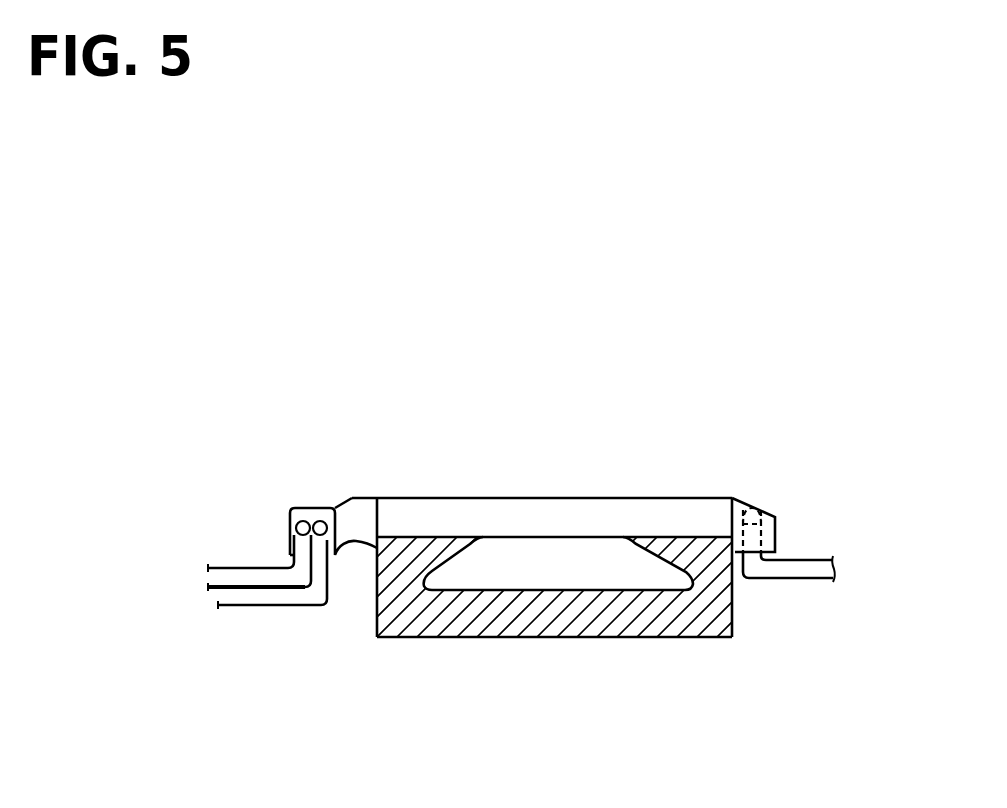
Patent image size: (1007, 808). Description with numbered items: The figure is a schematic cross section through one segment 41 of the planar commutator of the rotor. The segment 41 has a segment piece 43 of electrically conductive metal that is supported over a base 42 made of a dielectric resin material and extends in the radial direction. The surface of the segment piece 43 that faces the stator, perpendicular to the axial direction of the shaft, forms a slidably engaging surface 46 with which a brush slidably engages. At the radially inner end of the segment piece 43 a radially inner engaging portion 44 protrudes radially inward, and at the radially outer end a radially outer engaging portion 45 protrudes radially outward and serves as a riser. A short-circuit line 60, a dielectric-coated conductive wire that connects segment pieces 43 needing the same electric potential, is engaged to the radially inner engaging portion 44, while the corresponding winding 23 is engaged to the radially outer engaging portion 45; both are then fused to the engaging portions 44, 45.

The segment 41 is at (245, 331).
The base 42 is at (465, 627).
The segment piece 43 is at (648, 517).
The radially inner engaging portion 44 is at (290, 523).
The radially outer engaging portion 45 is at (776, 527).
The slidably engaging surface 46 is at (468, 497).
The short-circuit line 60 is at (272, 577).
The winding 23 is at (788, 570).